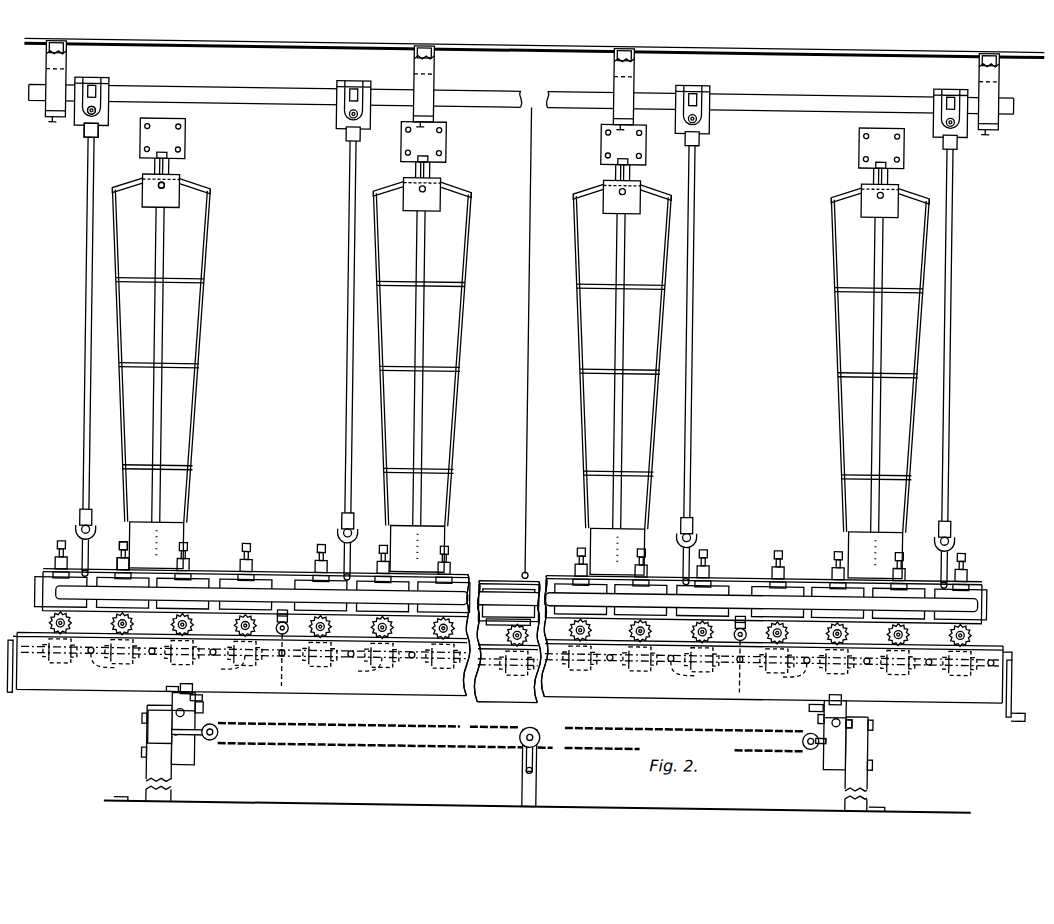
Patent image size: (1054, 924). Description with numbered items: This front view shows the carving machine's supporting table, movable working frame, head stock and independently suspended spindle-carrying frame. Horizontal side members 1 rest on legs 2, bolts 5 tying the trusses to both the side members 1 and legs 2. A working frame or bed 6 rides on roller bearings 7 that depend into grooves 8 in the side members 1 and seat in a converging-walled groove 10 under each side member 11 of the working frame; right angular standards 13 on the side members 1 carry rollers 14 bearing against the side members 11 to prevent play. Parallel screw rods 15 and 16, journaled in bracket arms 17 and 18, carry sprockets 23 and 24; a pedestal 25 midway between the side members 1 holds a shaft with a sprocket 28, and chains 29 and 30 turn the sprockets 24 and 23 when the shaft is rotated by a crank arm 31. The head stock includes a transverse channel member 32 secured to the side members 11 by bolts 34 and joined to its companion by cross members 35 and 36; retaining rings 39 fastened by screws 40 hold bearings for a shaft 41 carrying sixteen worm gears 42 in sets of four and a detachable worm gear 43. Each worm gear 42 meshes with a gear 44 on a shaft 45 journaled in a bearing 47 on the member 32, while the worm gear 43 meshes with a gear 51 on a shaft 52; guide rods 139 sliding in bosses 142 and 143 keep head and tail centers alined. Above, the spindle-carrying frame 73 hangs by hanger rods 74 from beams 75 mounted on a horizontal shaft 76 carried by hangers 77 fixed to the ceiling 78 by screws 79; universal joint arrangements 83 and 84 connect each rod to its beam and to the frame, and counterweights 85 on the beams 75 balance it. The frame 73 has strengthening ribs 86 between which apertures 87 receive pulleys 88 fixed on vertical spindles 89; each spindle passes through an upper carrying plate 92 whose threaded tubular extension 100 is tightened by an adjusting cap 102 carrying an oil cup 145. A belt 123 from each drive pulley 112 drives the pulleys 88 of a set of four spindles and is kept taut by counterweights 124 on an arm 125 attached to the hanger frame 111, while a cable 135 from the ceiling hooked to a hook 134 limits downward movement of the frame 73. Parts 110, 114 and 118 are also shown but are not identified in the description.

The side members 1 is at (207, 762).
The legs 2 is at (146, 770).
The bolts 5 is at (152, 722).
The working frame 6 is at (182, 697).
The roller bearings 7 is at (178, 728).
The grooves 8 is at (187, 731).
The groove 10 is at (186, 710).
The side member 11 is at (204, 682).
The supporting rods or standards 13 is at (213, 706).
The roller 14 is at (212, 694).
The screw rod 15 is at (228, 730).
The screw rod 16 is at (812, 730).
The bracket arms 17 is at (228, 724).
The bracket arms 18 is at (856, 704).
The sprocket 23 is at (222, 732).
The sprocket 24 is at (824, 734).
The pedestal 25 is at (533, 755).
The sprocket 28 is at (528, 730).
The chain 29 is at (702, 720).
The chain 30 is at (374, 720).
The crank arm 31 is at (543, 749).
The member 32 is at (100, 688).
The bolts 34 is at (182, 684).
The cross member 35 is at (20, 638).
The cross member 36 is at (1016, 638).
The retaining rings 39 is at (144, 664).
The screw 40 is at (286, 654).
The shaft 41 is at (96, 652).
The worm gears 42 is at (74, 664).
The worm gear 43 is at (526, 662).
The gear 44 is at (58, 624).
The shaft 45 is at (180, 626).
The bearing 47 is at (242, 626).
The gear 51 is at (514, 611).
The shaft 52 is at (536, 628).
The spindle-carrying frame 73 is at (232, 562).
The hanger rods 74 is at (90, 426).
The beams 75 is at (102, 76).
The horizontal shaft 76 is at (224, 82).
The hangers 77 is at (46, 60).
The ceiling 78 is at (300, 41).
The screws 79 is at (64, 50).
The universal joint arrangement 83 is at (102, 110).
The universal joint arrangement 84 is at (84, 530).
The counterweights 85 is at (100, 126).
The strengthening ribs 86 is at (308, 578).
The apertures 87 is at (52, 578).
The pulley 88 is at (62, 597).
The vertical spindle 89 is at (338, 592).
The upper carrying plate 92 is at (256, 562).
The tubular extension 100 is at (68, 548).
The adjusting cap 102 is at (126, 560).
The box 110 is at (188, 530).
The hanger frame 111 is at (198, 352).
The drive pulleys 112 is at (198, 558).
The bars 114 is at (172, 162).
The plate 118 is at (188, 134).
The belt 123 is at (491, 586).
The counterweights 124 is at (177, 204).
The arm 125 is at (160, 180).
The hook 134 is at (530, 566).
The cable 135 is at (533, 460).
The guide rods 139 is at (290, 656).
The boss 142 is at (286, 630).
The boss 143 is at (296, 610).
The oil cup 145 is at (130, 542).